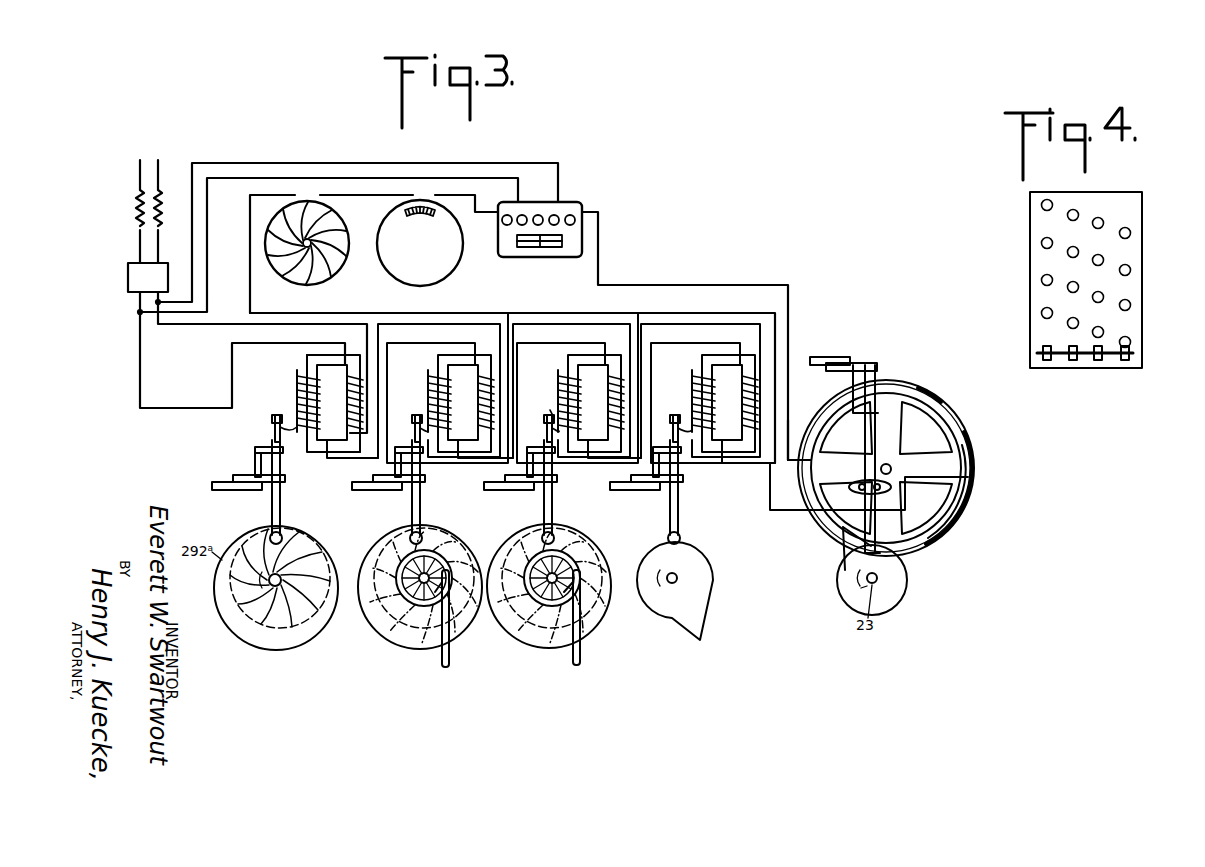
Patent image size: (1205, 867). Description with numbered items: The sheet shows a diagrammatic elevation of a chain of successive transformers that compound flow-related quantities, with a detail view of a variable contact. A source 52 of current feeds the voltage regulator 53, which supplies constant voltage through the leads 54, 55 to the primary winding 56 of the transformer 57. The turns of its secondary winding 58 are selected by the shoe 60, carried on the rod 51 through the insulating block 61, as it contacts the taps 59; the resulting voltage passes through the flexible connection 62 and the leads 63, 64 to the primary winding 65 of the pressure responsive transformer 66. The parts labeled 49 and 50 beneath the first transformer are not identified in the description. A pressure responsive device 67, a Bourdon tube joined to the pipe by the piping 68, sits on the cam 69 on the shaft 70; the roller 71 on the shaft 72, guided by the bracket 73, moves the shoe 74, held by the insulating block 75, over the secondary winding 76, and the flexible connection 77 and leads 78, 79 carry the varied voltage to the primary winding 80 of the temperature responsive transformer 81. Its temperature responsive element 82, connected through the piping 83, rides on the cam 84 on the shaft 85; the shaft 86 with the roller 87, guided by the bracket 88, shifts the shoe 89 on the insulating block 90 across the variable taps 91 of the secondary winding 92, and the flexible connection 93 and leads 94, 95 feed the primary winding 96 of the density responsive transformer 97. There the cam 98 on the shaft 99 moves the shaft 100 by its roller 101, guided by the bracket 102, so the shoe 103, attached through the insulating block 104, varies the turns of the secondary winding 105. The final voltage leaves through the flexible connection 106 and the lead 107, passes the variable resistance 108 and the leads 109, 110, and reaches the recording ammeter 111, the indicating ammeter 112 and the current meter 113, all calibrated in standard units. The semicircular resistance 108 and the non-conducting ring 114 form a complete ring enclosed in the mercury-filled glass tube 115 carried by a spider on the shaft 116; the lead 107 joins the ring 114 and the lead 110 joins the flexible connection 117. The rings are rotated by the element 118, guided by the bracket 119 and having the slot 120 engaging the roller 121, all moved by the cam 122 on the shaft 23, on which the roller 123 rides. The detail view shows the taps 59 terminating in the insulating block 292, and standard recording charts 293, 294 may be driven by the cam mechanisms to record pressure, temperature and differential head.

In FIG. 3, the shaft 23 is at (275, 586).
In FIG. 3, the cam disc 49 is at (215, 598).
In FIG. 3, the roller 50 is at (270, 538).
In FIG. 3, the rod 51 is at (272, 513).
In FIG. 3, the source of current 52 is at (158, 178).
In FIG. 3, the voltage regulator 53 is at (128, 279).
In FIG. 3, the lead 54 is at (228, 326).
In FIG. 3, the lead 55 is at (262, 344).
In FIG. 3, the primary winding 56 is at (340, 416).
In FIG. 3, the transformer 57 is at (343, 358).
In FIG. 3, the secondary winding 58 is at (330, 398).
In FIG. 3, the taps 59 is at (297, 396).
In FIG. 4, the taps 59 is at (1047, 313).
In FIG. 3, the shoe 60 is at (290, 427).
In FIG. 4, the shoe 60 is at (1083, 360).
In FIG. 3, the insulating block 61 is at (272, 427).
In FIG. 3, the flexible connection 62 is at (275, 440).
In FIG. 3, the lead 63 is at (300, 463).
In FIG. 3, the lead 64 is at (330, 460).
In FIG. 3, the primary winding 65 is at (456, 408).
In FIG. 3, the pressure responsive transformer 66 is at (470, 358).
In FIG. 3, the pressure responsive device 67 is at (400, 590).
In FIG. 3, the piping 68 is at (449, 656).
In FIG. 3, the cam 69 is at (388, 560).
In FIG. 3, the shaft 70 is at (412, 608).
In FIG. 3, the roller 71 is at (410, 539).
In FIG. 3, the shaft 72 is at (412, 513).
In FIG. 3, the bracket 73 is at (372, 492).
In FIG. 3, the shoe 74 is at (422, 412).
In FIG. 3, the insulating block 75 is at (412, 418).
In FIG. 3, the secondary winding 76 is at (428, 386).
In FIG. 3, the flexible connection 77 is at (415, 437).
In FIG. 3, the lead 78 is at (440, 466).
In FIG. 3, the lead 79 is at (460, 460).
In FIG. 3, the primary winding 80 is at (594, 406).
In FIG. 3, the temperature responsive transformer 81 is at (592, 358).
In FIG. 3, the temperature responsive element 82 is at (516, 602).
In FIG. 3, the piping 83 is at (580, 653).
In FIG. 3, the cam 84 is at (526, 566).
In FIG. 3, the shaft 85 is at (548, 592).
In FIG. 3, the shaft 86 is at (544, 515).
In FIG. 3, the roller 87 is at (542, 539).
In FIG. 3, the bracket 88 is at (510, 490).
In FIG. 3, the shoe 89 is at (555, 411).
In FIG. 3, the insulating block 90 is at (547, 422).
In FIG. 3, the variable taps 91 is at (558, 394).
In FIG. 3, the secondary winding 92 is at (558, 385).
In FIG. 3, the flexible connection 93 is at (547, 437).
In FIG. 3, the lead 94 is at (577, 466).
In FIG. 3, the lead 95 is at (592, 460).
In FIG. 3, the primary winding 96 is at (738, 402).
In FIG. 3, the density responsive transformer 97 is at (725, 358).
In FIG. 3, the cam 98 is at (702, 626).
In FIG. 3, the shaft 99 is at (670, 584).
In FIG. 3, the shaft 100 is at (670, 519).
In FIG. 3, the roller 101 is at (668, 538).
In FIG. 3, the bracket 102 is at (644, 482).
In FIG. 3, the shoe 103 is at (682, 410).
In FIG. 3, the insulating block 104 is at (672, 418).
In FIG. 3, the secondary winding 105 is at (692, 386).
In FIG. 3, the flexible connection 106 is at (716, 466).
In FIG. 3, the lead 107 is at (712, 465).
In FIG. 3, the variable resistance 108 is at (930, 396).
In FIG. 3, the lead 109 is at (778, 332).
In FIG. 3, the lead 110 is at (598, 272).
In FIG. 3, the recording ammeter 111 is at (322, 272).
In FIG. 3, the indicating ammeter 112 is at (440, 262).
In FIG. 3, the current meter 113 is at (572, 206).
In FIG. 3, the non-conducting semi-circular ring 114 is at (952, 529).
In FIG. 3, the glass tube 115 is at (968, 506).
In FIG. 3, the shaft 116 is at (894, 469).
In FIG. 3, the flexible connection 117 is at (789, 466).
In FIG. 3, the element 118 is at (877, 381).
In FIG. 3, the bracket 119 is at (860, 358).
In FIG. 3, the slot 120 is at (858, 485).
In FIG. 3, the roller 121 is at (878, 494).
In FIG. 3, the cam 122 is at (908, 591).
In FIG. 3, the roller 123 is at (892, 557).
In FIG. 3, the insulating block 292 is at (297, 403).
In FIG. 4, the insulating block 292 is at (1135, 249).
In FIG. 3, the recording chart 293 is at (372, 540).
In FIG. 3, the recording chart 294 is at (505, 540).